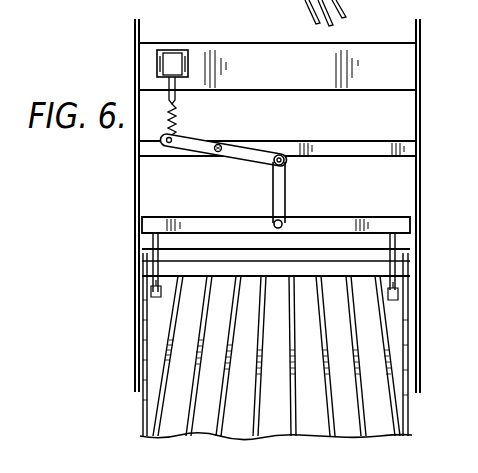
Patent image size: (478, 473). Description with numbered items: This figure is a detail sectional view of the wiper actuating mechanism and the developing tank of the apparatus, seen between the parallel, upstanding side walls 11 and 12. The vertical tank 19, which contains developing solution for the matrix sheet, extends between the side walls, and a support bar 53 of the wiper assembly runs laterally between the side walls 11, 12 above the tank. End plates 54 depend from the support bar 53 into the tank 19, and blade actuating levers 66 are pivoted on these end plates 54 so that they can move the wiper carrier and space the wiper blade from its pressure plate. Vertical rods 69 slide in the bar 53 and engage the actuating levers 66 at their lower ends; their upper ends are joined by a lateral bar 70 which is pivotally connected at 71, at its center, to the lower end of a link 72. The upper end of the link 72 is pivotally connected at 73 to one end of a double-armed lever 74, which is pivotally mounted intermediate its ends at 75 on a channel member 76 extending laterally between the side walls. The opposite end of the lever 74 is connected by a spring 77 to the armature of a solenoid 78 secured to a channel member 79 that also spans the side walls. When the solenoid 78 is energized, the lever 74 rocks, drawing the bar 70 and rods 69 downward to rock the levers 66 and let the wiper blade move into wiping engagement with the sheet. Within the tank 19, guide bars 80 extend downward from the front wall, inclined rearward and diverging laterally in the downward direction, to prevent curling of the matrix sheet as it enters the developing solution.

The side wall 11 is at (134, 198).
The side wall 12 is at (418, 186).
The vertical tank 19 is at (132, 425).
The support bar 53 is at (238, 232).
The end plates 54 is at (152, 288).
The blade actuating levers 66 is at (162, 298).
The vertical rods 69 is at (152, 246).
The lateral bar 70 is at (363, 217).
The pivotal connection 71 is at (283, 221).
The link 72 is at (282, 191).
The pivotal connection 73 is at (286, 168).
The double-armed lever 74 is at (254, 152).
The pivot 75 is at (219, 152).
The channel member 76 is at (385, 154).
The spring 77 is at (176, 113).
The solenoid 78 is at (176, 50).
The channel member 79 is at (388, 40).
The guide bars 80 is at (214, 381).